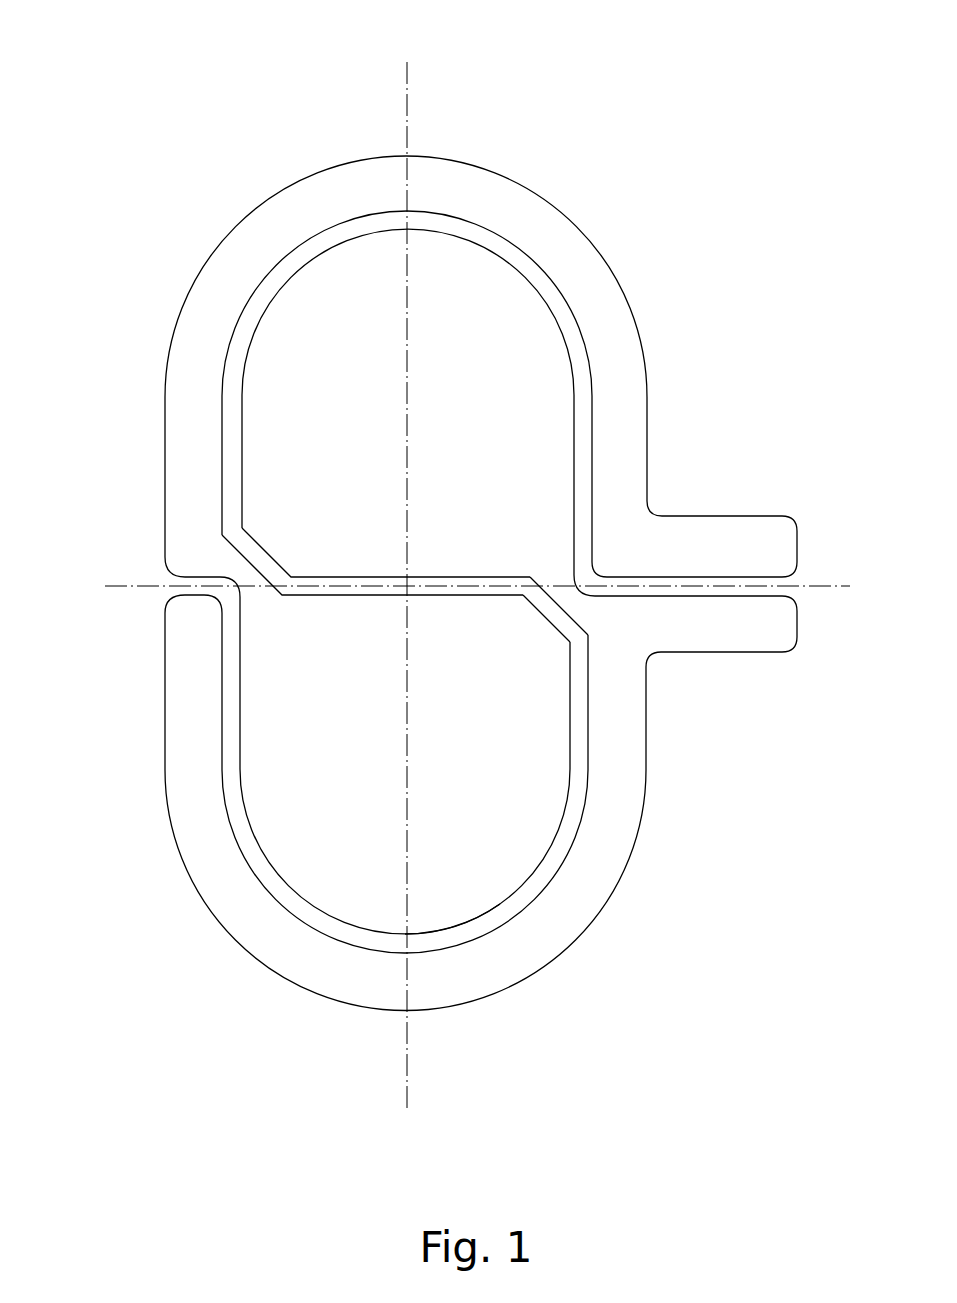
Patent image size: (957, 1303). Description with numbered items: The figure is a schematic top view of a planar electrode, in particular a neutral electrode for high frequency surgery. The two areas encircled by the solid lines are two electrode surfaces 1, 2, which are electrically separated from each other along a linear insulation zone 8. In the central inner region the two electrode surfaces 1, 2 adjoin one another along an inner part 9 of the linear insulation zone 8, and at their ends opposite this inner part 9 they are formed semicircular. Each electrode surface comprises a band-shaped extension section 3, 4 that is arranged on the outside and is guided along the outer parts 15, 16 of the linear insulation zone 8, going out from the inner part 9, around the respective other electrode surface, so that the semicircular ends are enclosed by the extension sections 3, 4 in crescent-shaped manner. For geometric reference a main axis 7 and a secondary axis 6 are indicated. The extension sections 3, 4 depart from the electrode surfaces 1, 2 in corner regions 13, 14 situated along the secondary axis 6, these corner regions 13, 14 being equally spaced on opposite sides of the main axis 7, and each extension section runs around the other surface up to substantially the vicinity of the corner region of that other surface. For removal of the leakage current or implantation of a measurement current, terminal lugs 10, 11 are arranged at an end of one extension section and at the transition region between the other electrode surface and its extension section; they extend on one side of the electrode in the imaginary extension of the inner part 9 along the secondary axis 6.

The electrode surface 1 is at (535, 420).
The electrode surface 2 is at (533, 752).
The band-shaped extension section 3 is at (550, 928).
The band-shaped extension section 4 is at (605, 315).
The secondary axis 6 is at (120, 586).
The main axis 7 is at (405, 100).
The linear insulation zone 8 is at (525, 263).
The inner part of the linear insulation zone 9 is at (485, 580).
The terminal lug 10 is at (770, 553).
The terminal lug 11 is at (727, 620).
The corner region 13 is at (257, 598).
The corner region 14 is at (533, 563).
The outer part of the linear insulation zone 15 is at (450, 937).
The outer part of the linear insulation zone 16 is at (482, 235).